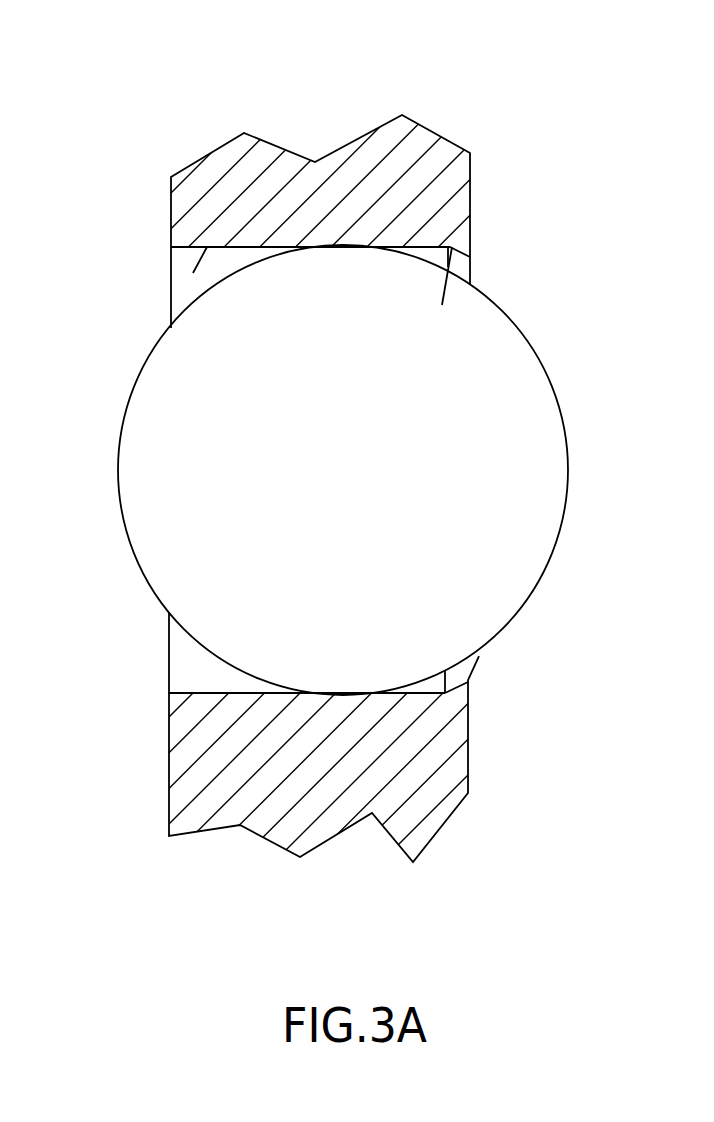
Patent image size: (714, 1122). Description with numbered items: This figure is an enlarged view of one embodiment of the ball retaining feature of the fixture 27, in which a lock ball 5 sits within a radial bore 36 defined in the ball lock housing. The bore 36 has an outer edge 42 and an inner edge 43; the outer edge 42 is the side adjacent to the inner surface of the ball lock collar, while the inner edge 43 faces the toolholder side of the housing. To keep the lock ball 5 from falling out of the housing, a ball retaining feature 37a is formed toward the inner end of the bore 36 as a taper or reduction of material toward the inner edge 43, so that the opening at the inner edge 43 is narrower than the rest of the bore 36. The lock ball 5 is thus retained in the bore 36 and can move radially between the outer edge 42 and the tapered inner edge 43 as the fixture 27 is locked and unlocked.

The fixture 27 is at (147, 117).
The radial bore 36 is at (308, 219).
The ball retaining feature 37a is at (548, 273).
The lock ball 5 is at (300, 470).
The outer edge 42 is at (317, 741).
The inner edge 43 is at (536, 701).